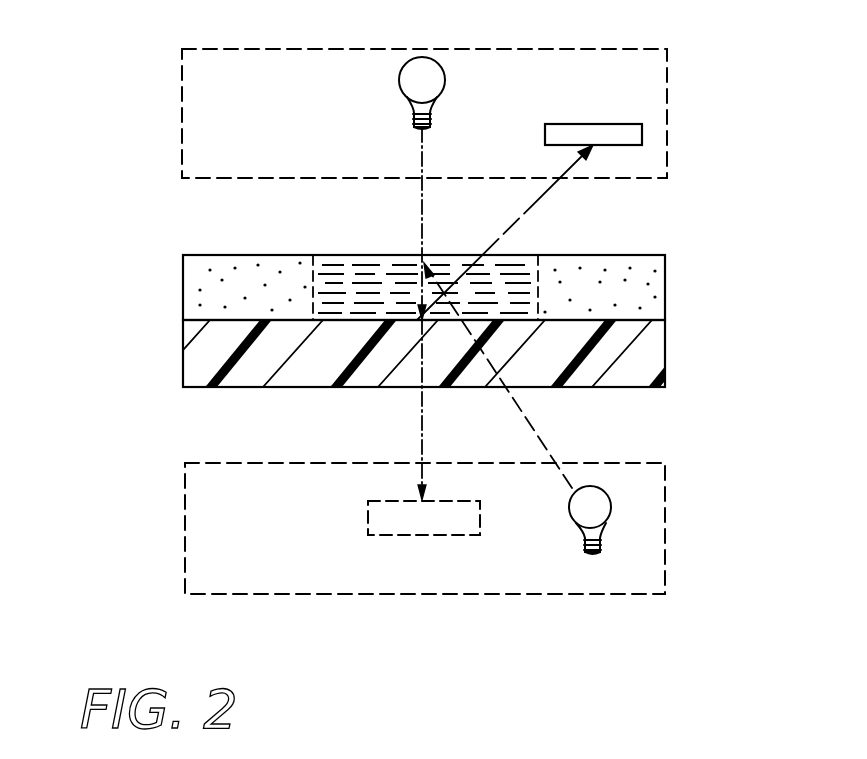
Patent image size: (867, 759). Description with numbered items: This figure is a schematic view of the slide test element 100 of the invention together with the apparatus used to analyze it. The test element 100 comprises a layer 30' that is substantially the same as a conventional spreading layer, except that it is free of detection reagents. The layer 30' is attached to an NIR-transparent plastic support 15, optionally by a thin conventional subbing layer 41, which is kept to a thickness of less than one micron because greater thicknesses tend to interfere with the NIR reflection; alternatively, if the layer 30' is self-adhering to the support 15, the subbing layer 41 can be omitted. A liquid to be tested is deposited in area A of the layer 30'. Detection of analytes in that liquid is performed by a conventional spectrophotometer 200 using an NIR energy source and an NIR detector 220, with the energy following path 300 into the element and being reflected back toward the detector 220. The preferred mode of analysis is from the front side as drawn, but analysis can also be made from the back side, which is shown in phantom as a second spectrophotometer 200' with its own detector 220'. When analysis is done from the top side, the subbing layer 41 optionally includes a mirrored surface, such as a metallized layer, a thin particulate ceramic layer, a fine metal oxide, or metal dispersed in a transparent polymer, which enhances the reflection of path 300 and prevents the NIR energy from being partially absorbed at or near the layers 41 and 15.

The slide test element 100 is at (404, 310).
The NIR-transparent plastic support 15 is at (665, 355).
The subbing layer 41 is at (640, 328).
The spreading layer 30' is at (462, 287).
The area A is at (388, 275).
The spectrophotometer 200 is at (474, 107).
The NIR detector 220 is at (655, 123).
The lower optical unit 200' is at (469, 528).
The lower detector 220' is at (445, 543).
The path 300 is at (548, 200).